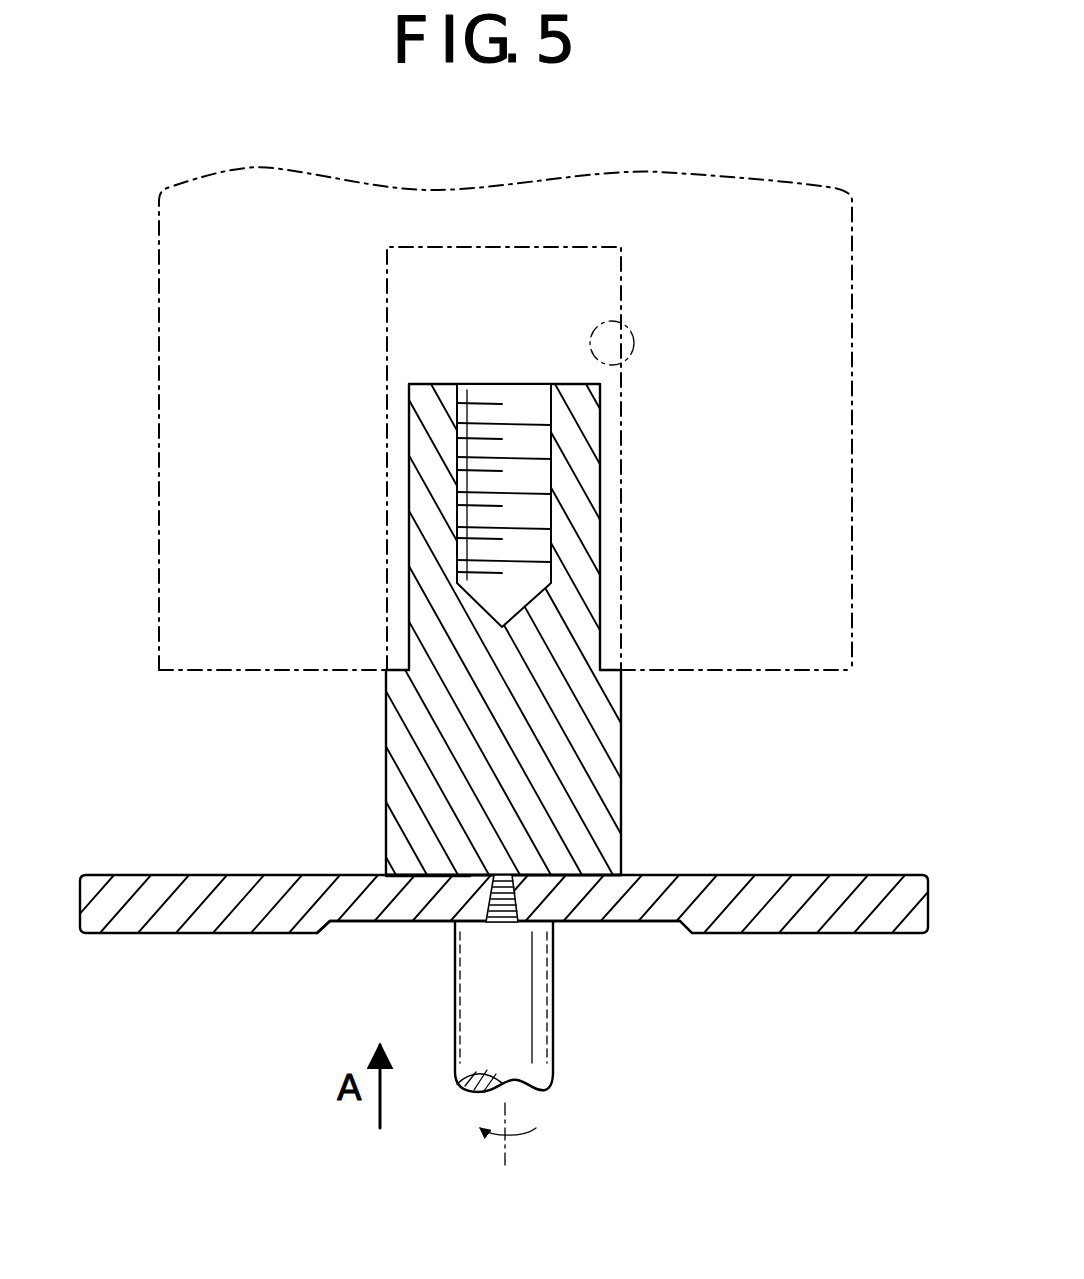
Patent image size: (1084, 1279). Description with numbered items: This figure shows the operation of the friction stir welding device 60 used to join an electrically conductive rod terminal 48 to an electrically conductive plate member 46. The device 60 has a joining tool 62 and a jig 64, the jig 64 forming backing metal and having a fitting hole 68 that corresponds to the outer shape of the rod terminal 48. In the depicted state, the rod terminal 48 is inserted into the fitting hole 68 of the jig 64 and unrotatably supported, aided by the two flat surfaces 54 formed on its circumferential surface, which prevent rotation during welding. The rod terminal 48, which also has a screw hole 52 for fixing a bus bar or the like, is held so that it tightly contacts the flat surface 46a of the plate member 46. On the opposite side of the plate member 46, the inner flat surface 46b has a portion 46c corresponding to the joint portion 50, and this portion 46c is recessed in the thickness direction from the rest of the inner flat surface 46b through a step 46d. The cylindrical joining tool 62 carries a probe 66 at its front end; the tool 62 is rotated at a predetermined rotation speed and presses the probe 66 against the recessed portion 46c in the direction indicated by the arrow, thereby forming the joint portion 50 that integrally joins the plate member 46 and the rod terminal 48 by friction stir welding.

The friction stir welding device 60 is at (727, 127).
The jig 64 is at (185, 513).
The fitting hole 68 is at (630, 362).
The electrically conductive rod terminal 48 is at (605, 469).
The flat surfaces 54 is at (409, 492).
The screw hole 52 is at (550, 445).
The electrically conductive plate member 46 is at (829, 938).
The flat surface 46a is at (604, 876).
The inner flat surface 46b is at (757, 934).
The portion corresponding to the joint portion 46c is at (380, 922).
The step 46d is at (328, 934).
The joint portion 50 is at (432, 881).
The joining tool 62 is at (560, 1050).
The probe 66 is at (503, 932).